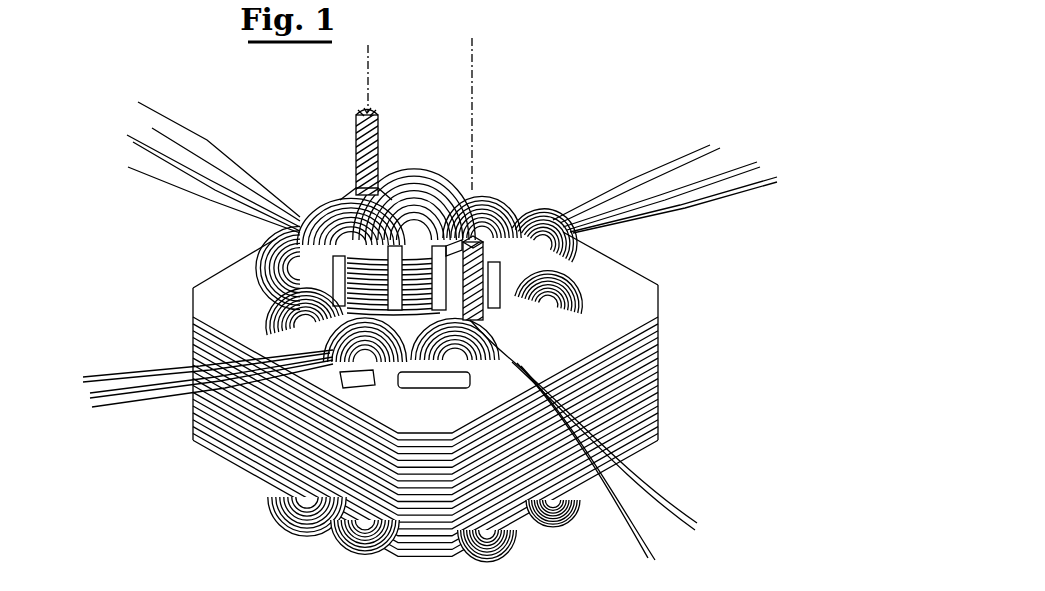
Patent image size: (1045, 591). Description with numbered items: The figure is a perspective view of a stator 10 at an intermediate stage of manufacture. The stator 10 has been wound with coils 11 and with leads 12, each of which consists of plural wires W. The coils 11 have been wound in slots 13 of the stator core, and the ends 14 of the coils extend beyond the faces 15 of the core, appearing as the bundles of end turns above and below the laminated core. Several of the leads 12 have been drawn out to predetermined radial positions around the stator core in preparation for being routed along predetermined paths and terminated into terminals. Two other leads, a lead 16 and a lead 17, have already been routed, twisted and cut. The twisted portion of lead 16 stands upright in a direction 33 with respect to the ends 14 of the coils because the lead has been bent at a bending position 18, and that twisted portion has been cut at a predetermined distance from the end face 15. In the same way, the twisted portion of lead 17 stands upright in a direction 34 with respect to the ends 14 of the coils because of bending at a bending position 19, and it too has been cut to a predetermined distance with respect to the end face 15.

The stator 10 is at (688, 388).
The coils 11 is at (272, 502).
The leads 12 is at (218, 155).
The slots 13 is at (348, 378).
The ends of the coils 14 is at (437, 188).
The faces of the core 15 is at (632, 304).
The lead 16 is at (350, 135).
The lead 17 is at (438, 268).
The bending position 18 is at (347, 183).
The bending position 19 is at (456, 312).
The direction 33 is at (370, 70).
The direction 34 is at (478, 130).
The wires W is at (128, 167).